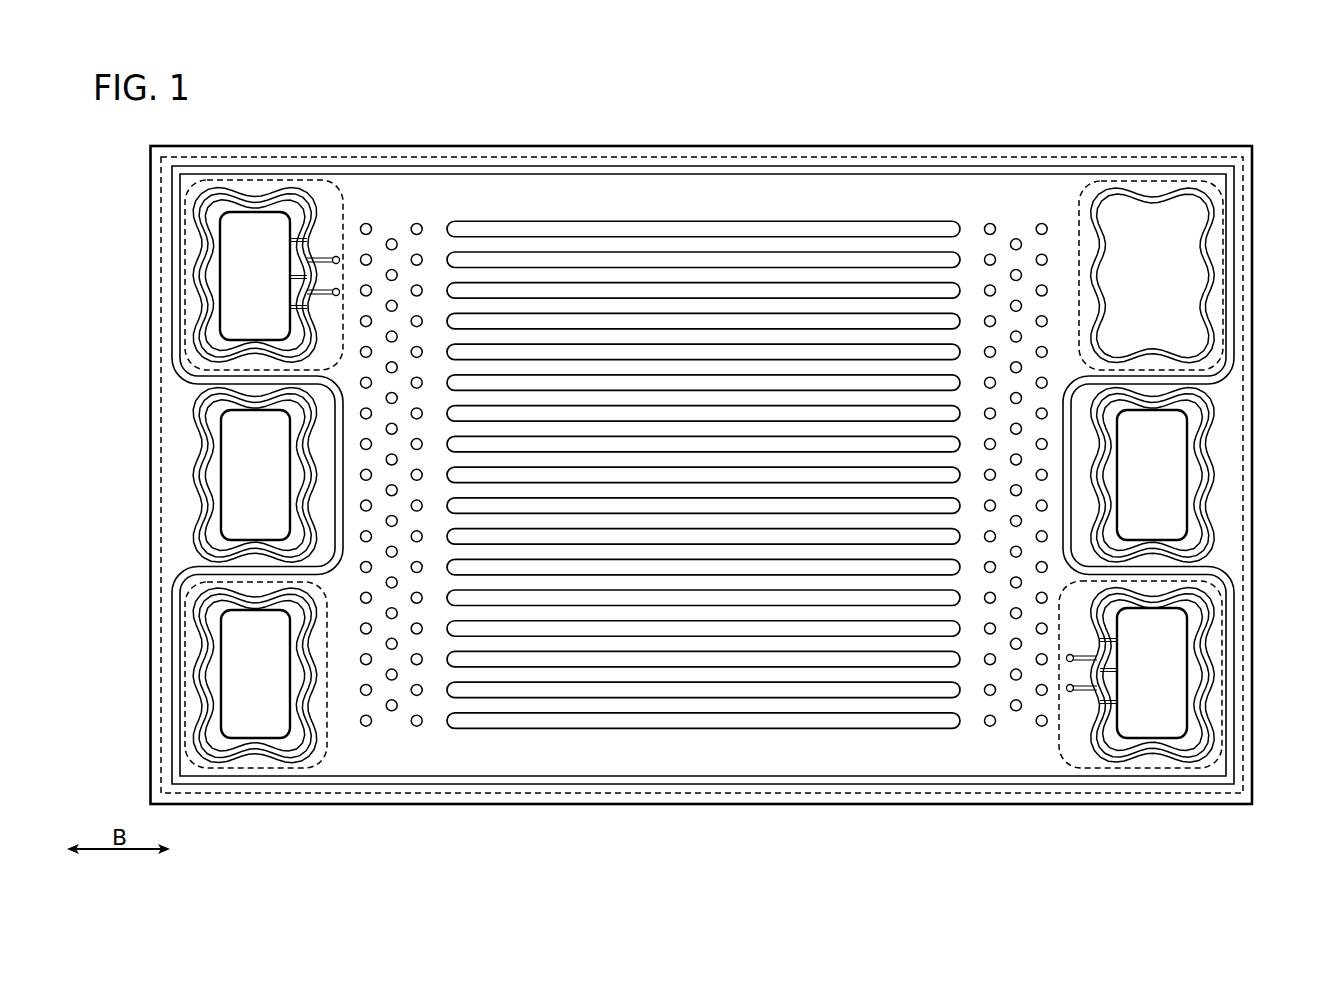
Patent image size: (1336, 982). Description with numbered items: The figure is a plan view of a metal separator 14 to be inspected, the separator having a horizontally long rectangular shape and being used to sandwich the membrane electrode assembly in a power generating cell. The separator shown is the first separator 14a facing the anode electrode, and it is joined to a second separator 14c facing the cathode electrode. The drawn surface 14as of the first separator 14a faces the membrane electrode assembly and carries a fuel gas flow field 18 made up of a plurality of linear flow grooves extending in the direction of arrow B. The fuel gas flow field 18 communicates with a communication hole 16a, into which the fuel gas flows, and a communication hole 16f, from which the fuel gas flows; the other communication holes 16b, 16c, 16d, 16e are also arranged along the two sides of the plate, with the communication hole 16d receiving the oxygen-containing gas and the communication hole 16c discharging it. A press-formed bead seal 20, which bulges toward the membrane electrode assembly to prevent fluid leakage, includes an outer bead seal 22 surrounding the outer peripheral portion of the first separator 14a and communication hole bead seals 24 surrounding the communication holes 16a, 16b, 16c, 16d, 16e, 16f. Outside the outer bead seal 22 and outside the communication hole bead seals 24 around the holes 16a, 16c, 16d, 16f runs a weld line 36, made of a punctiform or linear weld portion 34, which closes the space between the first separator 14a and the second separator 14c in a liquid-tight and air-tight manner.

The metal separator 14 is at (702, 442).
The first separator 14a is at (1068, 146).
The surface of the first separator 14as is at (970, 228).
The second separator 14c is at (1243, 296).
The communication hole 16a is at (258, 292).
The communication hole 16b is at (258, 484).
The communication hole 16c is at (258, 683).
The communication hole 16d is at (1156, 293).
The communication hole 16e is at (1156, 484).
The communication hole 16f is at (1155, 683).
The fuel gas flow field 18 is at (571, 276).
The bead seal 20 is at (702, 446).
The outer bead seal 22 is at (731, 166).
The communication hole bead seal 24 is at (200, 602).
The weld portion 34 is at (704, 450).
The weld line 36 is at (704, 450).